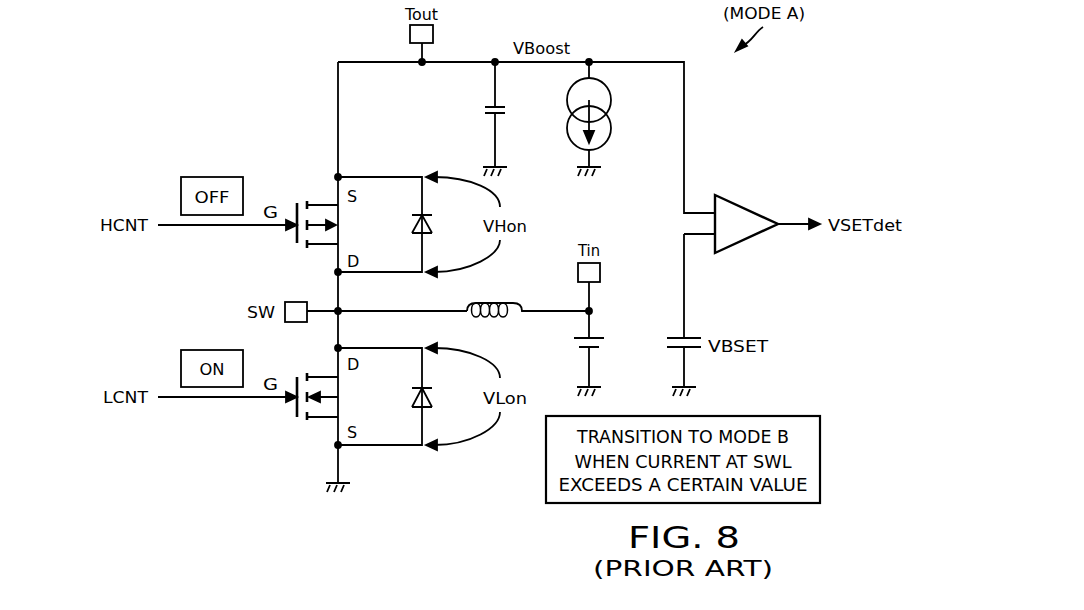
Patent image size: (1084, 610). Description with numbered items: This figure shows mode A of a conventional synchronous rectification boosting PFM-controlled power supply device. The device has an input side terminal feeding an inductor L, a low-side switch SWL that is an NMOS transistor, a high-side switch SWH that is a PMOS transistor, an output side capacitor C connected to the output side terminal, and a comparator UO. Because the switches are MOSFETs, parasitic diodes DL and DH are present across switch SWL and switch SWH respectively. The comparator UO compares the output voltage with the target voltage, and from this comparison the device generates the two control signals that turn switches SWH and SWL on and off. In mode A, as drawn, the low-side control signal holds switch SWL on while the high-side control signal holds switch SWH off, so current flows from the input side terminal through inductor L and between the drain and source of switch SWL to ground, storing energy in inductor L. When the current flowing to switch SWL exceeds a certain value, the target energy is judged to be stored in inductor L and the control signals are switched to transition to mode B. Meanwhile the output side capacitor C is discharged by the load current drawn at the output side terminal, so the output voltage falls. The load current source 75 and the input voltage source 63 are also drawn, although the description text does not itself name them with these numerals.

The current source Io (output load current source) 75 is at (611, 100).
The input power supply VIN 63 is at (574, 341).
The switch SWH is at (342, 224).
The switch SWL is at (342, 396).
The parasitic diode DH is at (440, 225).
The parasitic diode DL is at (438, 398).
The output side capacitor C is at (504, 117).
The inductor L is at (528, 298).
The comparator UO is at (745, 207).